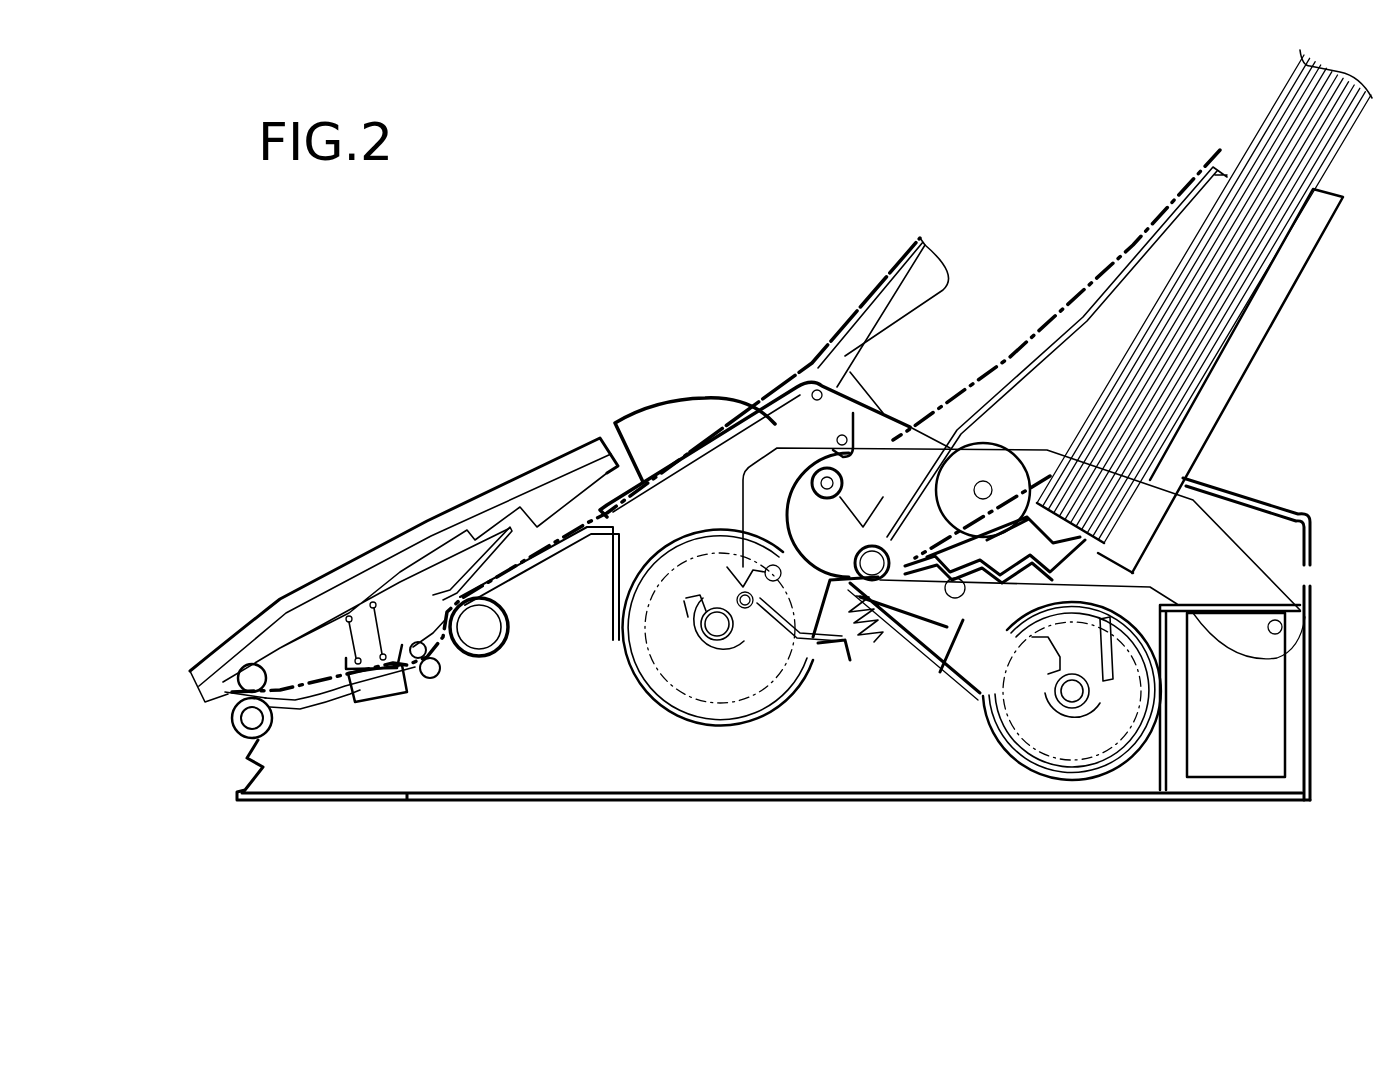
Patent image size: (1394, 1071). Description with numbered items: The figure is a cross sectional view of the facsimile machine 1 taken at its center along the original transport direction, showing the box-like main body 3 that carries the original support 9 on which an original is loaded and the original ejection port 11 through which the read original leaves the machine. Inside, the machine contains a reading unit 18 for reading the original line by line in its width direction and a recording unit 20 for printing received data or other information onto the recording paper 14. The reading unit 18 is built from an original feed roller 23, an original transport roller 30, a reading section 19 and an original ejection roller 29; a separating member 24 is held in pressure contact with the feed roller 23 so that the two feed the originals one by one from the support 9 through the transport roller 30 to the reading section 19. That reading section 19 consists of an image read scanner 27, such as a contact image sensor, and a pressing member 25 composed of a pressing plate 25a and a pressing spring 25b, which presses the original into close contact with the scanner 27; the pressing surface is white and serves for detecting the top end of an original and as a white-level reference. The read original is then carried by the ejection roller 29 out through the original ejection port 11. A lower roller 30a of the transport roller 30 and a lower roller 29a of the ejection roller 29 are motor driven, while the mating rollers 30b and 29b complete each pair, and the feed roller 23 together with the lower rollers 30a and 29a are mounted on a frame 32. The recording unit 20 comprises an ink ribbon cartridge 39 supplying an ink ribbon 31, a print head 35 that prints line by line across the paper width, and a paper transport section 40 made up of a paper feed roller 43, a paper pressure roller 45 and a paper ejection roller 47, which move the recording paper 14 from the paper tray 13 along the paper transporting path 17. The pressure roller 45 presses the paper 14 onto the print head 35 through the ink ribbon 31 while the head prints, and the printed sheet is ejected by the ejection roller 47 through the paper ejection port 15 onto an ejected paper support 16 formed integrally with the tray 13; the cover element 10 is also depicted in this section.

The facsimile machine 1 is at (371, 338).
The main body 3 is at (773, 782).
The original support 9 is at (700, 455).
The discharge tray 10 is at (835, 345).
The original ejection port 11 is at (227, 707).
The paper tray 13 is at (1247, 332).
The recording paper 14 is at (1273, 150).
The paper ejection port 15 is at (881, 413).
The ejected paper support 16 is at (1137, 253).
The paper transporting path 17 is at (1193, 187).
The reading unit 18 is at (357, 534).
The reading section 19 is at (424, 688).
The recording unit 20 is at (967, 226).
The original feed roller 23 is at (565, 590).
The separating member 24 is at (457, 573).
The pressing member 25 is at (396, 606).
The pressing plate 25a is at (335, 660).
The pressing spring 25b is at (333, 613).
The image read scanner 27 is at (387, 693).
The original ejection roller 29 is at (378, 873).
The lower roller 29a is at (260, 693).
The lower guide 29b is at (303, 693).
The original transport roller 30 is at (575, 873).
The lower roller 30a is at (438, 670).
The drive roller 30b is at (468, 660).
The ink ribbon 31 is at (957, 600).
The frame 32 is at (257, 677).
The print head 35 is at (858, 645).
The ink ribbon cartridge 39 is at (935, 690).
The paper transport section 40 is at (1068, 234).
The paper feed roller 43 is at (993, 447).
The paper pressure roller 45 is at (873, 553).
The paper ejection roller 47 is at (828, 445).